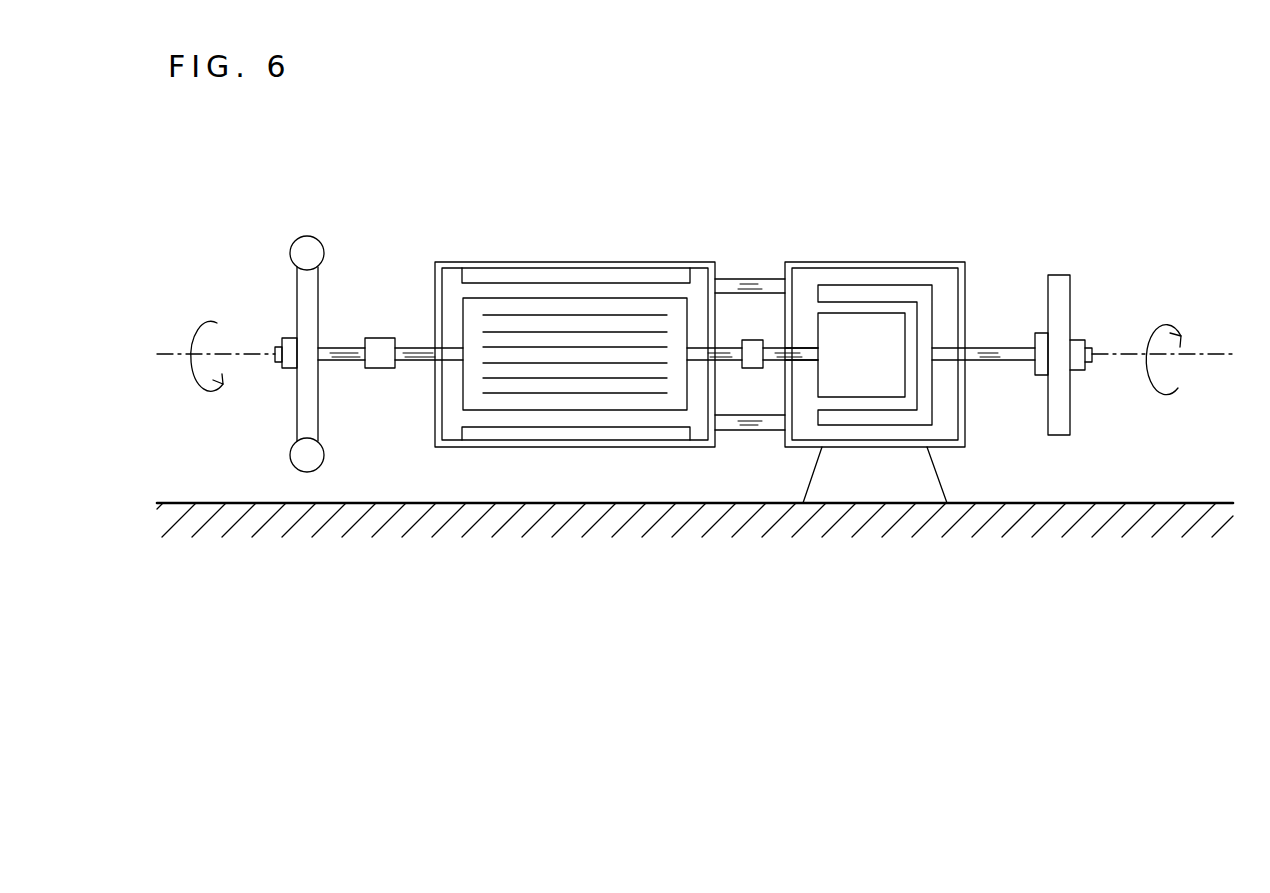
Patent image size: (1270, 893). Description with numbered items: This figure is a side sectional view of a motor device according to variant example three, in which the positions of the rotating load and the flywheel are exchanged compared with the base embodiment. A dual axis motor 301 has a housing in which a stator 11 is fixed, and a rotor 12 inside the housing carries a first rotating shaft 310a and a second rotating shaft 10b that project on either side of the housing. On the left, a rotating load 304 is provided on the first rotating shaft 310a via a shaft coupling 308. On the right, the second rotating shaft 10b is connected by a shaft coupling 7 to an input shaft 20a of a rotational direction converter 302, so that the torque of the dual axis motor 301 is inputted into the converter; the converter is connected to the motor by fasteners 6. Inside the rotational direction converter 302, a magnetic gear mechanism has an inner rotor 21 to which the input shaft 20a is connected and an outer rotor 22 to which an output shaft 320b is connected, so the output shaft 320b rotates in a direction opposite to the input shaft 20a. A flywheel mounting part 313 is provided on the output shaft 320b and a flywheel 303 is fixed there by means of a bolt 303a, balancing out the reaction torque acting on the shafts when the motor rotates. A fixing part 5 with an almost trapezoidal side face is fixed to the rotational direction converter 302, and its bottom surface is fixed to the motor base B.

The rotating load 304 is at (307, 245).
The shaft coupling 308 is at (378, 370).
The first rotating shaft 310a is at (415, 345).
The dual axis motor 301 is at (631, 255).
The stator 11 is at (498, 273).
The rotor 12 is at (562, 305).
The second rotating shaft 10b is at (723, 345).
The shaft coupling 7 is at (752, 368).
The fastener 6 is at (757, 279).
The rotational direction converter 302 is at (859, 257).
The input shaft 20a is at (803, 345).
The outer rotor 22 is at (877, 287).
The inner rotor 21 is at (890, 312).
The fixing part 5 is at (922, 476).
The output shaft 320b is at (975, 345).
The flywheel mounting part 313 is at (1040, 334).
The flywheel 303 is at (1059, 282).
The bolt 303a is at (1077, 340).
The motor base B is at (1097, 502).